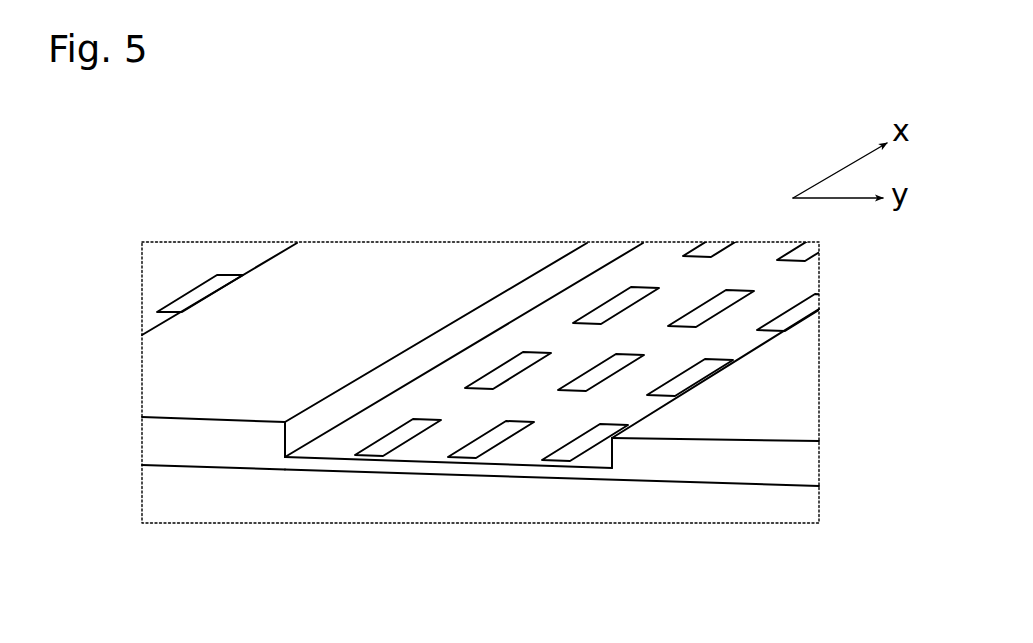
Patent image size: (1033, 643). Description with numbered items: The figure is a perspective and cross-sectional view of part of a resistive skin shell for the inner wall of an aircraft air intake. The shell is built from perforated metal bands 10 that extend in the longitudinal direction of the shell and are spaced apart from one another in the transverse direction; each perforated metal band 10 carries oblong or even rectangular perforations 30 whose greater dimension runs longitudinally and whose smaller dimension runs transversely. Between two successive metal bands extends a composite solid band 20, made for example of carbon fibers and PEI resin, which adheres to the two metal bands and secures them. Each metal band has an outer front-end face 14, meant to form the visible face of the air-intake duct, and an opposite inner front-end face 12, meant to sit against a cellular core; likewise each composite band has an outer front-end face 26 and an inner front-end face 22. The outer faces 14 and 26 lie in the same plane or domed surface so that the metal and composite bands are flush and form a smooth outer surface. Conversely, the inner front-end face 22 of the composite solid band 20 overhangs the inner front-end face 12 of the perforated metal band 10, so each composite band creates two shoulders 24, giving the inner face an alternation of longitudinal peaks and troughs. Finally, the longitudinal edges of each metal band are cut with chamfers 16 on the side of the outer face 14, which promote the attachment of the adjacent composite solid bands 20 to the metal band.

The perforated metal band 10 is at (422, 450).
The inner front-end face 12 is at (667, 268).
The outer front-end face 14 is at (530, 479).
The chamfer 16 is at (287, 466).
The composite solid band 20 is at (240, 448).
The inner front-end face 22 is at (380, 283).
The shoulder 24 is at (255, 262).
The outer front-end face 26 is at (176, 469).
The perforation 30 is at (613, 307).